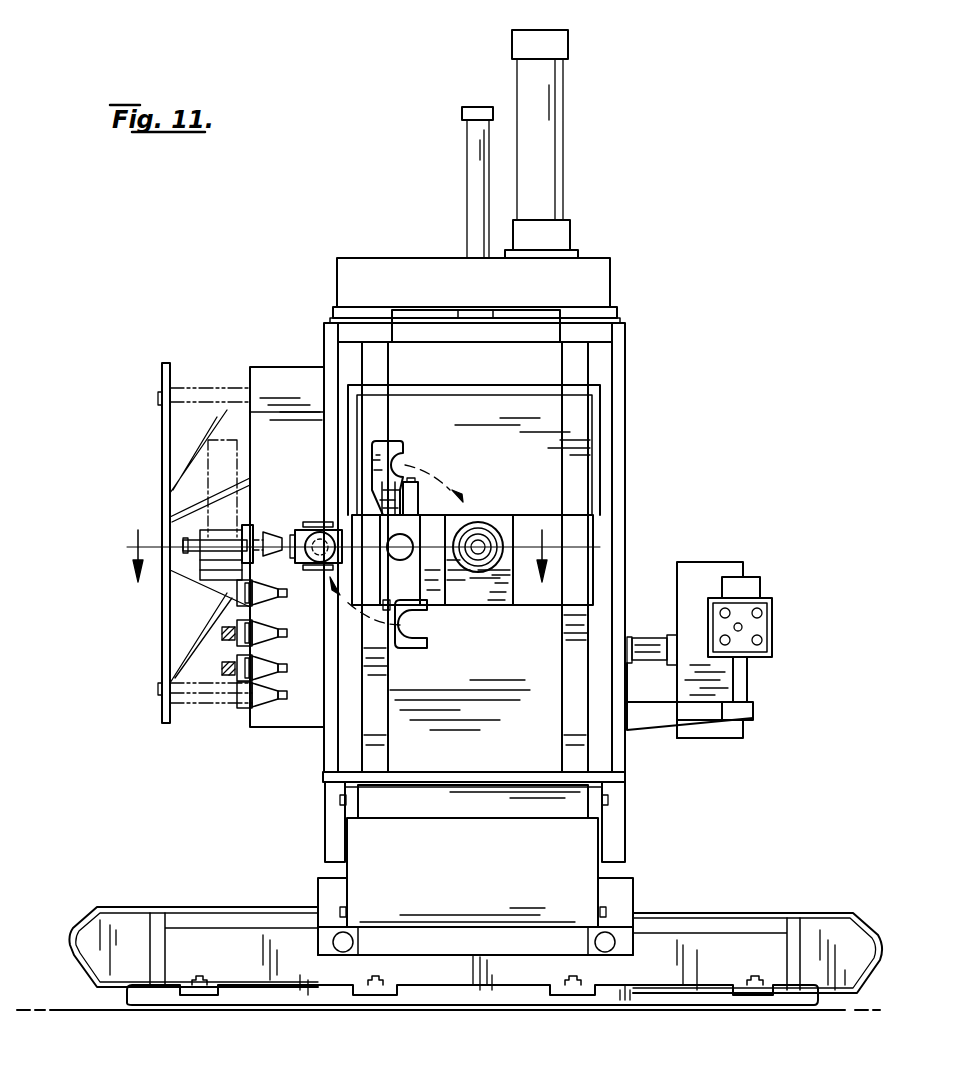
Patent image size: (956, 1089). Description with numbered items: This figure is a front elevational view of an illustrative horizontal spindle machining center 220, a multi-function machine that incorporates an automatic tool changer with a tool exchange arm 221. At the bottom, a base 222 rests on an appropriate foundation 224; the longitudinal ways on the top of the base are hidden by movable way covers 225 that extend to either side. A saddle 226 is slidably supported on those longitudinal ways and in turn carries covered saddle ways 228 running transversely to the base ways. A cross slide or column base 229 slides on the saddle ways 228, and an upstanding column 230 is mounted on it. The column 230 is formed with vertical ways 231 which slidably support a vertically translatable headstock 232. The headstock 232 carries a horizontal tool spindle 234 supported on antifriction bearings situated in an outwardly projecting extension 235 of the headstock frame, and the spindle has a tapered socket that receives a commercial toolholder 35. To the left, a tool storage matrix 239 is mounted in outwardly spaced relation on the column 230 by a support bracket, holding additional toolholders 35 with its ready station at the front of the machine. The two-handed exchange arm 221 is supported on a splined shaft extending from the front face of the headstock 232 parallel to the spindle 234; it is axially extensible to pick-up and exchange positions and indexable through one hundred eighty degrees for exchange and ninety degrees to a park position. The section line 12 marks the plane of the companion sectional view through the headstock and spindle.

The section line 12- 12 is at (359, 544).
The toolholder 35 is at (273, 693).
The horizontal spindle machining center 220 is at (300, 789).
The tool exchange arm 221 is at (385, 445).
The base 222 is at (224, 942).
The foundation 224 is at (88, 1007).
The way covers 225 is at (713, 912).
The saddle 226 is at (625, 882).
The saddle ways 228 is at (370, 898).
The cross slide 229 is at (622, 823).
The column 230 is at (632, 431).
The vertical ways 231 is at (386, 706).
The headstock 232 is at (603, 531).
The tool spindle 234 is at (478, 522).
The headstock frame extension 235 is at (490, 572).
The tool storage matrix 239 is at (158, 648).